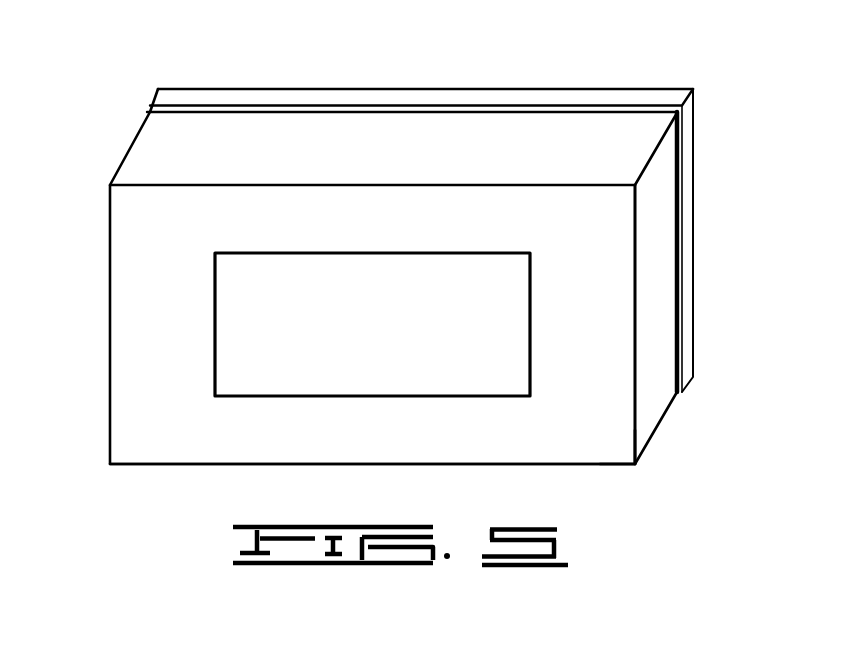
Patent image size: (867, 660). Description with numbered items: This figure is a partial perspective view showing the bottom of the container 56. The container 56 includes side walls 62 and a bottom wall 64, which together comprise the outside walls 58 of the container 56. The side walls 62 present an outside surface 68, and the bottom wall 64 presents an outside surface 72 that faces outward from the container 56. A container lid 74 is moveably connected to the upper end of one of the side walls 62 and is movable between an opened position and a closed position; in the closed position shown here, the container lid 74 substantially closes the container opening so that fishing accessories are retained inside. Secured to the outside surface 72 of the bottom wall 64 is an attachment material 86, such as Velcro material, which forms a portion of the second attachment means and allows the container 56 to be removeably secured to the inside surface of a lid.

The container 56 is at (153, 155).
The outside walls 58 is at (500, 147).
The side walls 62 is at (382, 140).
The bottom wall 64 is at (603, 422).
The outside surface 68 is at (657, 285).
The outside surface 72 is at (442, 448).
The container lid 74 is at (623, 90).
The attachment material 86 is at (230, 377).